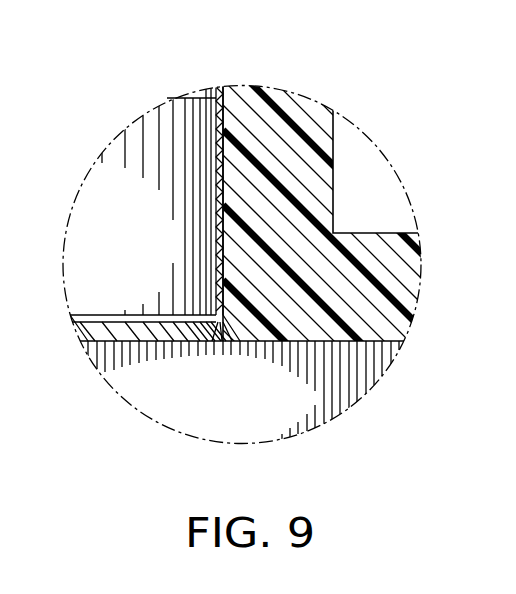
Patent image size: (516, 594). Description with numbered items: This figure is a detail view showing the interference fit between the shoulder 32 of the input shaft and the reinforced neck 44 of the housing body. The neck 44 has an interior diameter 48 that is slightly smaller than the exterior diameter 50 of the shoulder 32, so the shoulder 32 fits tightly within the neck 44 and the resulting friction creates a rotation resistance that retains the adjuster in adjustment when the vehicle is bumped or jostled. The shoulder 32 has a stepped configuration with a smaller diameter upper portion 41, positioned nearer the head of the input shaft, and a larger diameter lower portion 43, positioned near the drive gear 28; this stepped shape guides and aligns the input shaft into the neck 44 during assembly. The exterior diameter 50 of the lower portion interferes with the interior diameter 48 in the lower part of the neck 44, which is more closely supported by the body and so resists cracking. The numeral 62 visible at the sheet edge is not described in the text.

The drive gear 28 is at (207, 400).
The shoulder 32 is at (209, 112).
The smaller diameter upper portion 41 is at (193, 97).
The larger diameter lower portion 43 is at (88, 223).
The reinforced neck 44 is at (312, 126).
The interior diameter 48 is at (218, 200).
The exterior diameter 50 is at (222, 150).
The adjacent figure element 62 is at (0, 518).